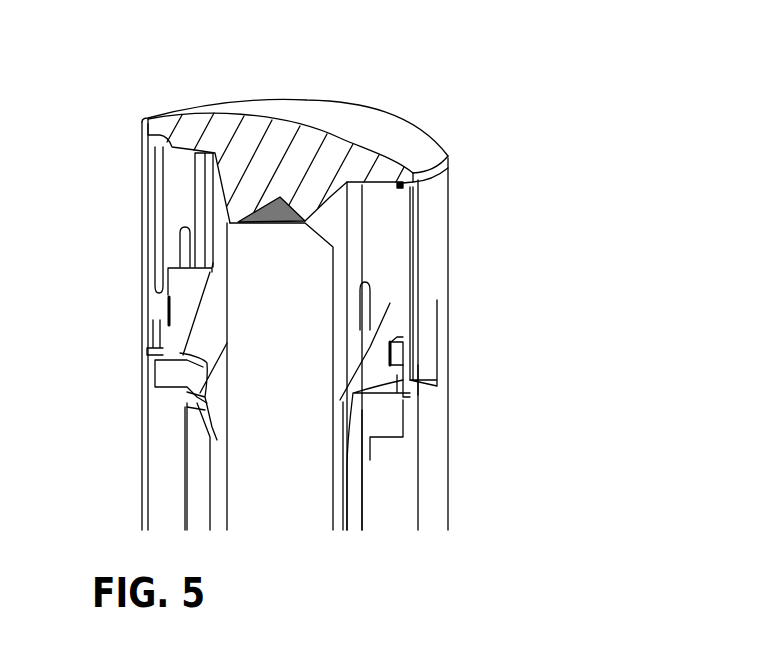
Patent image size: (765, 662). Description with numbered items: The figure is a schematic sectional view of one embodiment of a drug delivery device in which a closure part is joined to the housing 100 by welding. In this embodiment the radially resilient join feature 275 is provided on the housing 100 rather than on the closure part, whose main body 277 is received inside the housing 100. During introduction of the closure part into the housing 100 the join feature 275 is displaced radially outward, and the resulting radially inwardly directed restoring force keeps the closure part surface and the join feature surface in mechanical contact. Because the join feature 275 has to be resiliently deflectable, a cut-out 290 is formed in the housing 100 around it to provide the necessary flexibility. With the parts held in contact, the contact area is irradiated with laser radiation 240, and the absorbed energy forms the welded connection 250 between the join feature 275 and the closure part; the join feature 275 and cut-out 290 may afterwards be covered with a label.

The housing 100 is at (438, 214).
The main body 277 is at (290, 148).
The welded connection 250 is at (167, 312).
The join feature 275 is at (164, 295).
The cut-out 290 is at (437, 348).
The laser radiation 240 is at (420, 363).